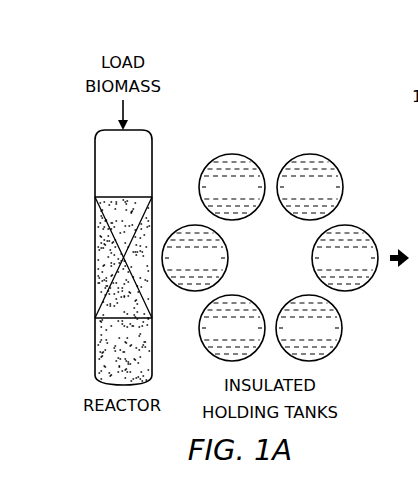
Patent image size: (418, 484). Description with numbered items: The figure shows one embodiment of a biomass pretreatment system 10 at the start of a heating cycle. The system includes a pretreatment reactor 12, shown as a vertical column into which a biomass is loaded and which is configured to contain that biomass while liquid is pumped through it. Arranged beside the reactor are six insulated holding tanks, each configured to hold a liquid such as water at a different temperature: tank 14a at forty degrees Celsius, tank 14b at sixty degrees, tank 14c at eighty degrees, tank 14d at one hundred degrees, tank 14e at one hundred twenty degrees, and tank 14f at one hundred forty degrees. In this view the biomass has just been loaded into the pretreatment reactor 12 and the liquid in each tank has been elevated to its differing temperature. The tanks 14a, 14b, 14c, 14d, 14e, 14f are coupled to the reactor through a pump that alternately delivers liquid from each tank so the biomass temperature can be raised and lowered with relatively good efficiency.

The biomass pretreatment system 10 is at (358, 110).
The pretreatment reactor 12 is at (152, 149).
The tank 14a is at (338, 170).
The tank 14b is at (352, 226).
The tank 14c is at (338, 344).
The tank 14d is at (249, 296).
The tank 14e is at (190, 291).
The tank 14f is at (233, 154).